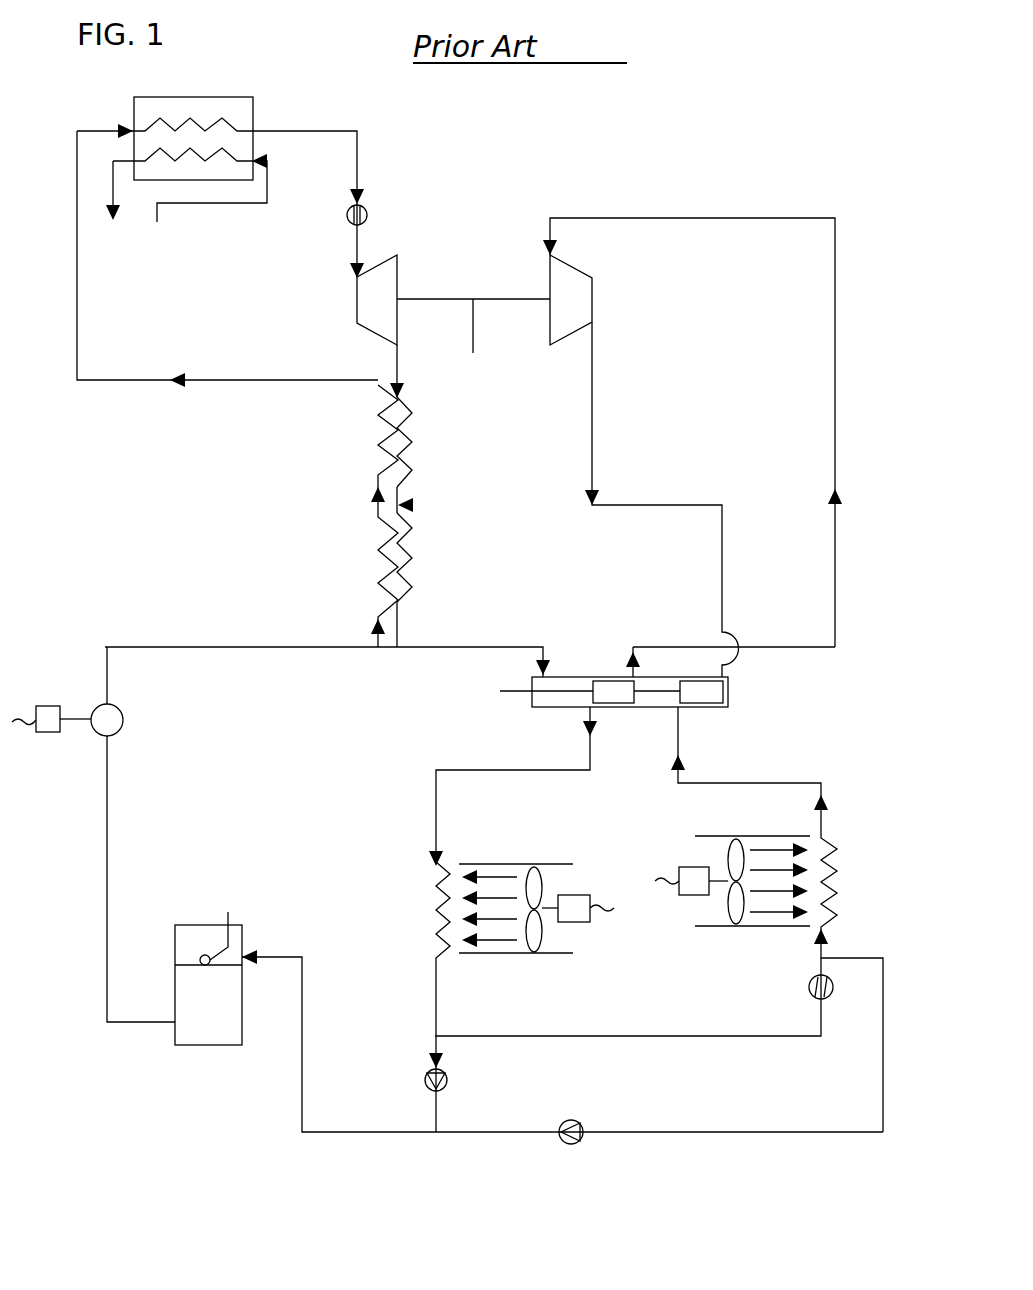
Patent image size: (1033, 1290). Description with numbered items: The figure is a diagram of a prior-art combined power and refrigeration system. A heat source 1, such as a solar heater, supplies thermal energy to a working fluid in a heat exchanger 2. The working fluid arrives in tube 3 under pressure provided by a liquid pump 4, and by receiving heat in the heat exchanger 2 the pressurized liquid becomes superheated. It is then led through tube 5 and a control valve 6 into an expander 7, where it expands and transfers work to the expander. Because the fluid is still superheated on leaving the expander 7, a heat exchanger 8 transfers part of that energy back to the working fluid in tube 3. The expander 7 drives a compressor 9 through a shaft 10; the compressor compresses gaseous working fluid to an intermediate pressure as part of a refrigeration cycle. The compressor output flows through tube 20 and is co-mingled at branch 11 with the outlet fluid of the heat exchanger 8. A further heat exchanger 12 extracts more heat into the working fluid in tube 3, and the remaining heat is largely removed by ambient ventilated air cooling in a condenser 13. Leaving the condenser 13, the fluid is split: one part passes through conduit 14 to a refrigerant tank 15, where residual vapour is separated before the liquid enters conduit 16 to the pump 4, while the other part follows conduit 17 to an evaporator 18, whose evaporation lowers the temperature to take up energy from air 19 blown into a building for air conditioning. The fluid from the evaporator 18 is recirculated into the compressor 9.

The heat source 1 is at (210, 215).
The heat exchanger 2 is at (218, 95).
The tube 3 is at (235, 378).
The liquid pump 4 is at (110, 728).
The tube 5 is at (357, 158).
The control valve 6 is at (367, 220).
The expander 7 is at (397, 272).
The heat exchanger 8 is at (407, 428).
The compressor 9 is at (592, 290).
The shaft 10 is at (473, 299).
The branch 11 is at (405, 490).
The heat exchanger 12 is at (410, 585).
The condenser 13 is at (403, 858).
The conduit 14 is at (302, 1018).
The refrigerant tank 15 is at (215, 1020).
The conduit 16 is at (107, 853).
The conduit 17 is at (605, 1036).
The evaporator 18 is at (853, 833).
The air 19 is at (770, 856).
The tube 20 is at (592, 408).